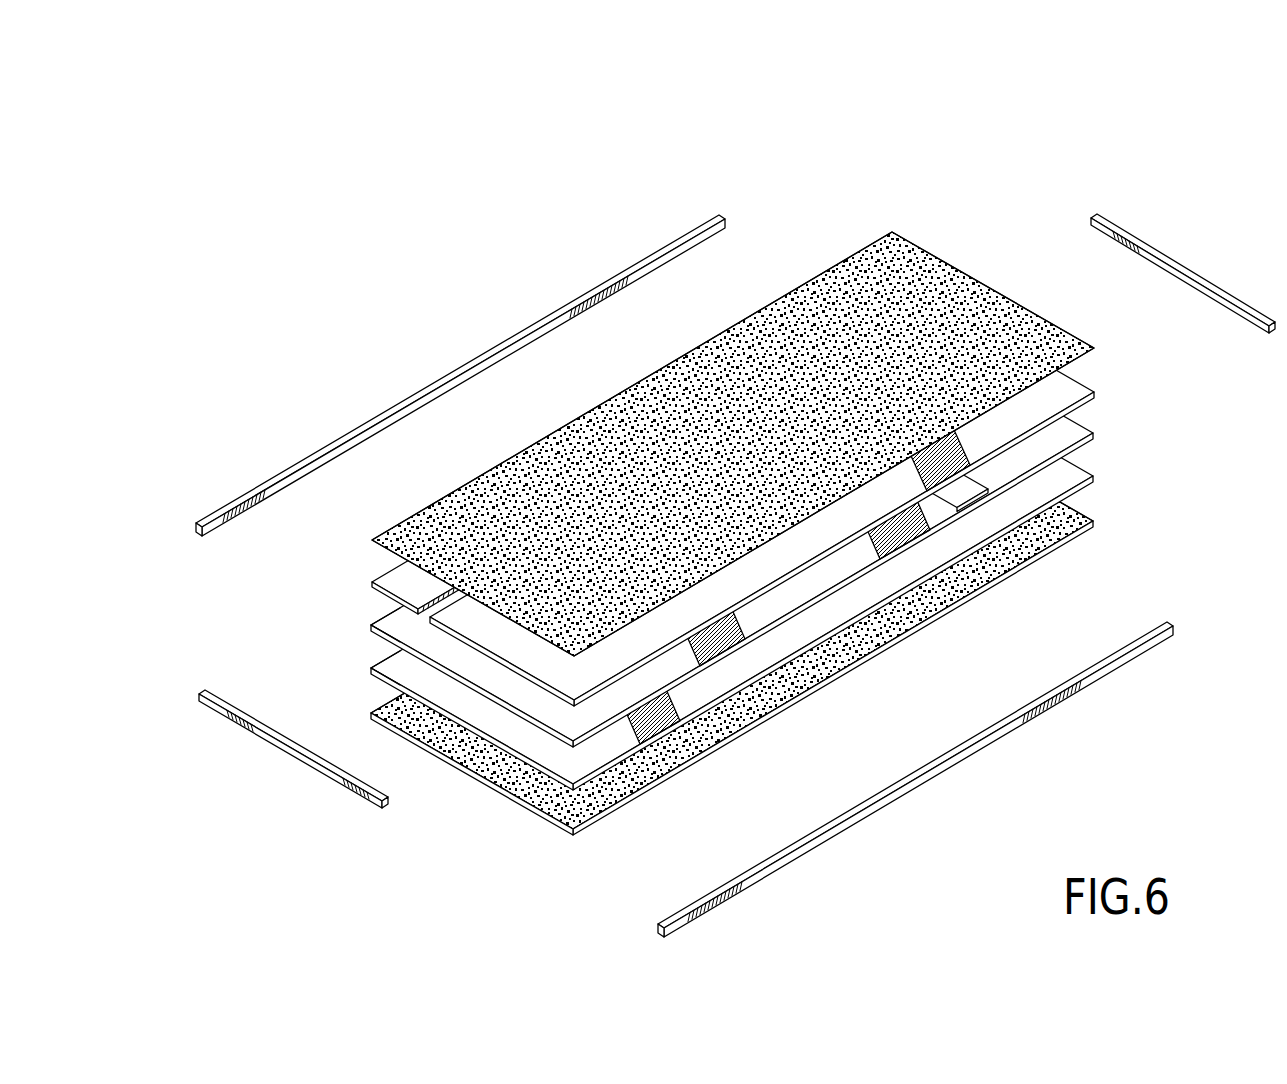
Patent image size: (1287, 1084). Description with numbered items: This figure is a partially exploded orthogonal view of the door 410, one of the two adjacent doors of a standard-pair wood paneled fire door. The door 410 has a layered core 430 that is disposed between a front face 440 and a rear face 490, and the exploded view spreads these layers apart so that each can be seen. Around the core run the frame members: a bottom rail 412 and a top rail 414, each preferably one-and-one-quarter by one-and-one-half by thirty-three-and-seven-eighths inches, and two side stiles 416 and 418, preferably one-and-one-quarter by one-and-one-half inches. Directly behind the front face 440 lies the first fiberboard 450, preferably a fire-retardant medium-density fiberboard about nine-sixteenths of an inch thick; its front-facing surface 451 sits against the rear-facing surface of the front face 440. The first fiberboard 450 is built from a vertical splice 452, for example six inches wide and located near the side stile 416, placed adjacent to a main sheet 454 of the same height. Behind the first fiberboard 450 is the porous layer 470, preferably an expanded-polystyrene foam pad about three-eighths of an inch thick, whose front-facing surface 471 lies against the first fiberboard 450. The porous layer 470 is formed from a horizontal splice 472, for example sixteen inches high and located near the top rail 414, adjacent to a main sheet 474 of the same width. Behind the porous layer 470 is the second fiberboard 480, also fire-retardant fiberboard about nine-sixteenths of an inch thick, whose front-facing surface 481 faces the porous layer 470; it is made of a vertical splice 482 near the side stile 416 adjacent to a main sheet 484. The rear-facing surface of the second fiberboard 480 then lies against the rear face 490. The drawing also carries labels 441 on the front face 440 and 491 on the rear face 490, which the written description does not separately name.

The door 410 is at (1134, 150).
The bottom rail 412 is at (280, 748).
The top rail 414 is at (1190, 273).
The side stile 416 is at (453, 373).
The side stile 418 is at (953, 770).
The core 430 is at (216, 636).
The front face 440 is at (950, 264).
The top sheet surface 441 is at (434, 532).
The first fiberboard 450 is at (1068, 376).
The front-facing surface 451 is at (1088, 394).
The vertical splice 452 is at (395, 572).
The main sheet 454 is at (440, 597).
The porous layer 470 is at (1060, 419).
The front-facing surface 471 is at (815, 573).
The horizontal splice 472 is at (1090, 439).
The main sheet 474 is at (393, 619).
The second fiberboard 480 is at (1053, 483).
The front-facing surface 481 is at (1087, 488).
The vertical splice 482 is at (608, 745).
The main sheet 484 is at (393, 661).
The rear face 490 is at (1087, 525).
The bottom sheet edge 491 is at (986, 575).